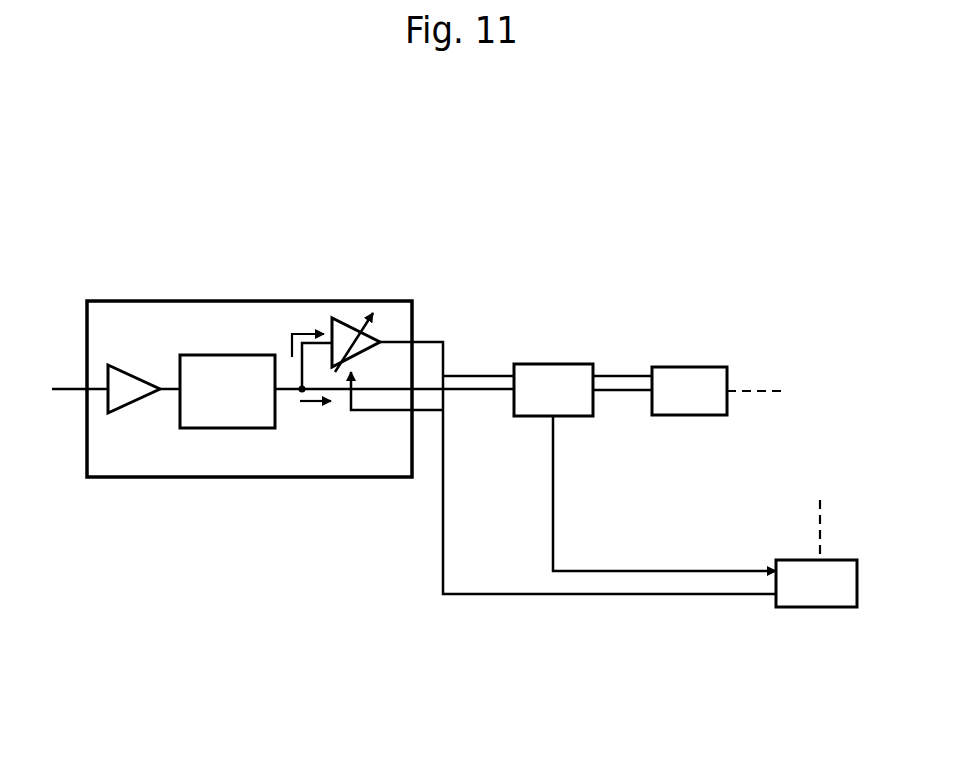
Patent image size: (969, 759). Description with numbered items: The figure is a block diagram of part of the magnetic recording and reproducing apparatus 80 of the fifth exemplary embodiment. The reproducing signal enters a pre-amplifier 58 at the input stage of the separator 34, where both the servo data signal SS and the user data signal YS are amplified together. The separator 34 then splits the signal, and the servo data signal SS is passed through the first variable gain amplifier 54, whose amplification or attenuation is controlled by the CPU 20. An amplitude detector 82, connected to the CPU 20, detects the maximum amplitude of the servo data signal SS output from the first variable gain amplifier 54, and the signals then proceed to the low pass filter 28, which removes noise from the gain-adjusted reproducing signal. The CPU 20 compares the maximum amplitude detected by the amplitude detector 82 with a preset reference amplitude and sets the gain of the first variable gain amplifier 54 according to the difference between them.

The magnetic recording and reproducing apparatus 80 is at (484, 210).
The pre-amplifier 58 is at (129, 369).
The separator 34 is at (227, 356).
The first variable gain amplifier 54 is at (342, 319).
The amplitude detector 82 is at (555, 364).
The low pass filter 28 is at (689, 343).
The CPU 20 is at (817, 607).